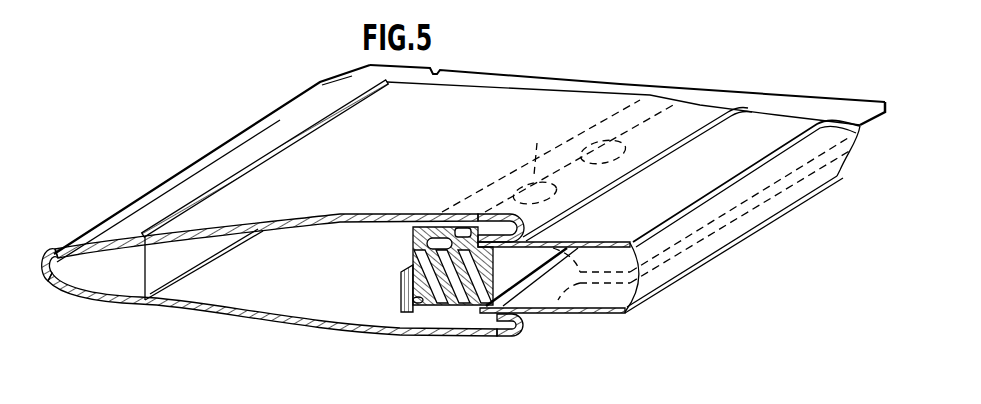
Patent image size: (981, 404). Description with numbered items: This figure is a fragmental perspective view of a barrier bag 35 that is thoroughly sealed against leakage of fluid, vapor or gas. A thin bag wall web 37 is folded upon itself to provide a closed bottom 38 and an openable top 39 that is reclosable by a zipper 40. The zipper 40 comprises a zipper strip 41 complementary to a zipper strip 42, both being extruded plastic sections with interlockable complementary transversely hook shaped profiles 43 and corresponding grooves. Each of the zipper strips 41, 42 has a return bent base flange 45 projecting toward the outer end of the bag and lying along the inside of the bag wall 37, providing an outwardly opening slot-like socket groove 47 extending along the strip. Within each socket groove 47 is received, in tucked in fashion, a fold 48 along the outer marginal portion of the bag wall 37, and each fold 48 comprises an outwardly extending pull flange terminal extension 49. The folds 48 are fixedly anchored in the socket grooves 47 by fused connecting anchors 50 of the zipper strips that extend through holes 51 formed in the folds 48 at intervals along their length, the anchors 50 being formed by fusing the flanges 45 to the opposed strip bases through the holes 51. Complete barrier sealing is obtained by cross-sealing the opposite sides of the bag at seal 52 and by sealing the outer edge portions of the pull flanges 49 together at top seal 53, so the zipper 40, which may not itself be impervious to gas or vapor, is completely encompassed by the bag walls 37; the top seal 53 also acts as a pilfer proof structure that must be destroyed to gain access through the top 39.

The bag 35 is at (140, 186).
The bag wall web 37 is at (178, 294).
The closed bottom 38 is at (50, 252).
The openable top 39 is at (540, 277).
The zipper 40 is at (398, 266).
The zipper strip 41 is at (412, 216).
The zipper strip 42 is at (390, 335).
The hook shaped profiles 43 is at (457, 303).
The base flange 45 is at (492, 240).
The socket groove 47 is at (422, 228).
The fold 48 is at (388, 293).
The pull flange terminal extension 49 is at (633, 241).
The fused connecting anchors 50 is at (461, 243).
The holes 51 is at (559, 133).
The cross-seal 52 is at (605, 97).
The top seal 53 is at (760, 205).